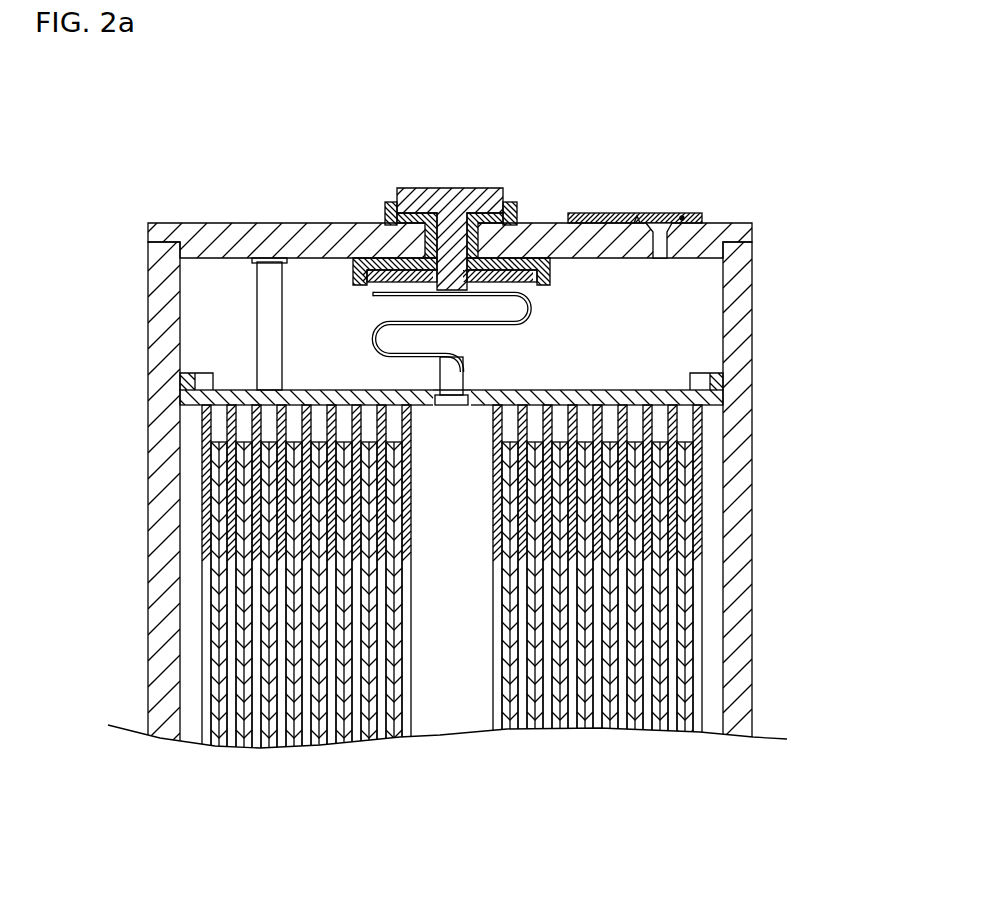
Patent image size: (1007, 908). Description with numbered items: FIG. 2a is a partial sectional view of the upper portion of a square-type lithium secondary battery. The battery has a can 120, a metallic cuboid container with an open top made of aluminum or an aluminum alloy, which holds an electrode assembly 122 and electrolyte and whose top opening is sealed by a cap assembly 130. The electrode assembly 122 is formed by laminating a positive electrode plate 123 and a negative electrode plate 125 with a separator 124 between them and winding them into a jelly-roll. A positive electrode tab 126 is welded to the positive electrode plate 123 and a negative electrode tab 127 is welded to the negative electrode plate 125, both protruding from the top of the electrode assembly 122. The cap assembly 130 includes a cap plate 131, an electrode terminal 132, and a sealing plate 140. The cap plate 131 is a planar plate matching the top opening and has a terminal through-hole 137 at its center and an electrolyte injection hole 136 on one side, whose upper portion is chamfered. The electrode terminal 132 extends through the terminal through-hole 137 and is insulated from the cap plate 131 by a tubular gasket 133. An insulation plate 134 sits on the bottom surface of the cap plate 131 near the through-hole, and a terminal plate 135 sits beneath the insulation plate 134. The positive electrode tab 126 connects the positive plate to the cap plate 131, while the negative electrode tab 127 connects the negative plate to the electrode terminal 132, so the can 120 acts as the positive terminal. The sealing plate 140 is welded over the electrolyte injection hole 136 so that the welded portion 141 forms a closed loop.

The can 120 is at (745, 597).
The electrode assembly 122 is at (533, 623).
The positive electrode plate 123 is at (685, 728).
The separator 124 is at (698, 728).
The negative electrode plate 125 is at (660, 728).
The positive electrode tab 126 is at (262, 317).
The negative electrode tab 127 is at (373, 343).
The cap assembly 130 is at (487, 212).
The cap plate 131 is at (273, 231).
The electrode terminal 132 is at (453, 202).
The tubular gasket 133 is at (512, 203).
The insulation plate 134 is at (349, 232).
The terminal plate 135 is at (528, 285).
The electrolyte injection hole 136 is at (660, 258).
The terminal through-hole 137 is at (417, 237).
The sealing plate 140 is at (682, 217).
The welded portion 141 is at (638, 212).